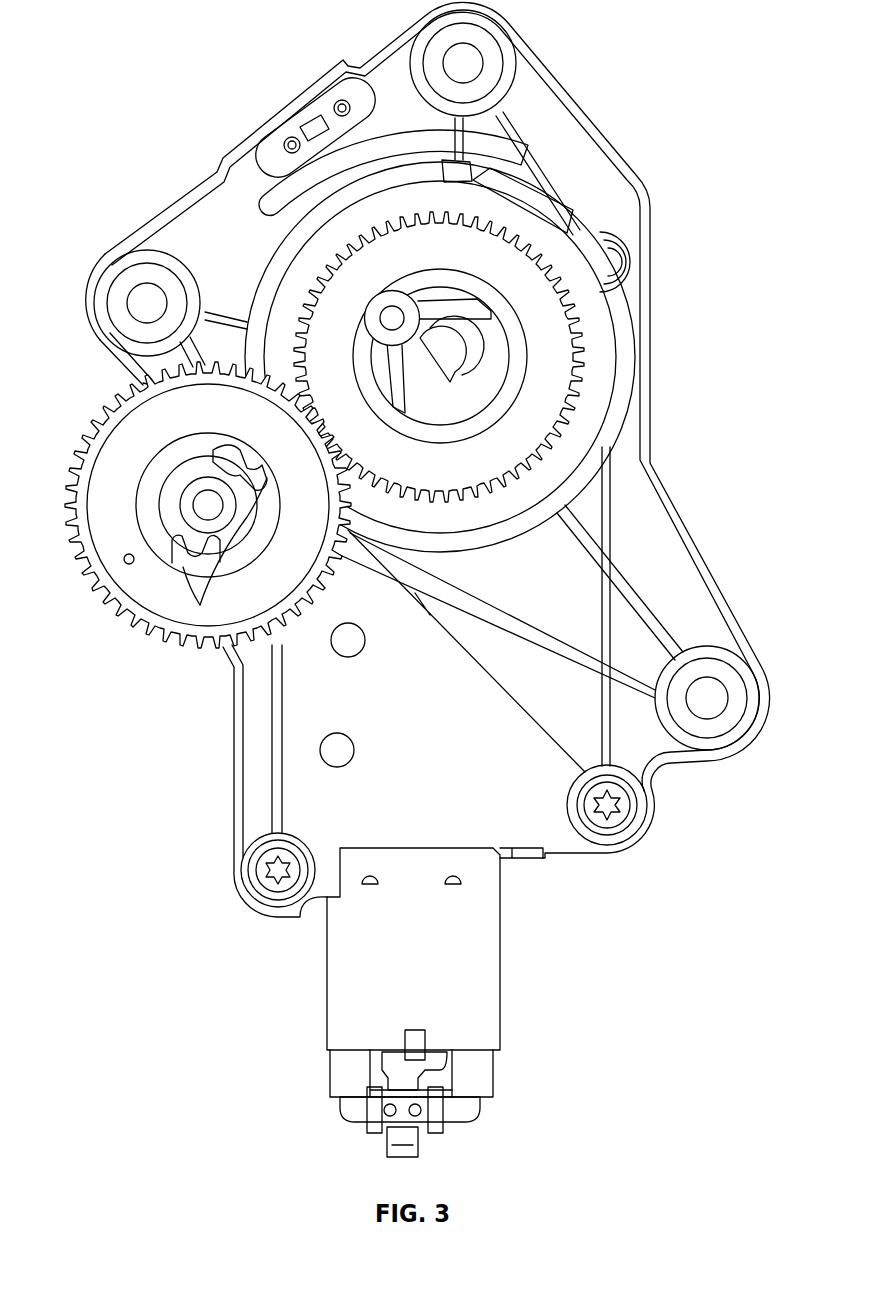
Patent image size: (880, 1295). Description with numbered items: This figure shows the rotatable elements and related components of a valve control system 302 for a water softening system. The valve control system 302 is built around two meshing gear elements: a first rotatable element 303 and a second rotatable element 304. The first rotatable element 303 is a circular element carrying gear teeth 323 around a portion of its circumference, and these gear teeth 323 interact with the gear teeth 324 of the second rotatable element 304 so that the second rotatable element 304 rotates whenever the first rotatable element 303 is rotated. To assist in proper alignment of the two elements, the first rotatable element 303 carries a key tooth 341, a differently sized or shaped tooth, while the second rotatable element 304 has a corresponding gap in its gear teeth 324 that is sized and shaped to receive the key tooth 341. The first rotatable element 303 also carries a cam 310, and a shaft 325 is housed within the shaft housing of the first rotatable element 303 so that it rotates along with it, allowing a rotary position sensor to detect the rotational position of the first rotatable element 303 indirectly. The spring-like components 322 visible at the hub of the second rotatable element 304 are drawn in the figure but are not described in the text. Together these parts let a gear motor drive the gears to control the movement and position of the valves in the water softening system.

The valve control system 302 is at (176, 34).
The first rotatable element 303 is at (603, 345).
The second rotatable element 304 is at (113, 487).
The cam 310 is at (365, 303).
The spring 322 is at (183, 567).
The gear teeth 323 is at (450, 352).
The gear teeth 324 is at (100, 597).
The shaft 325 is at (490, 312).
The key tooth 341 is at (143, 383).